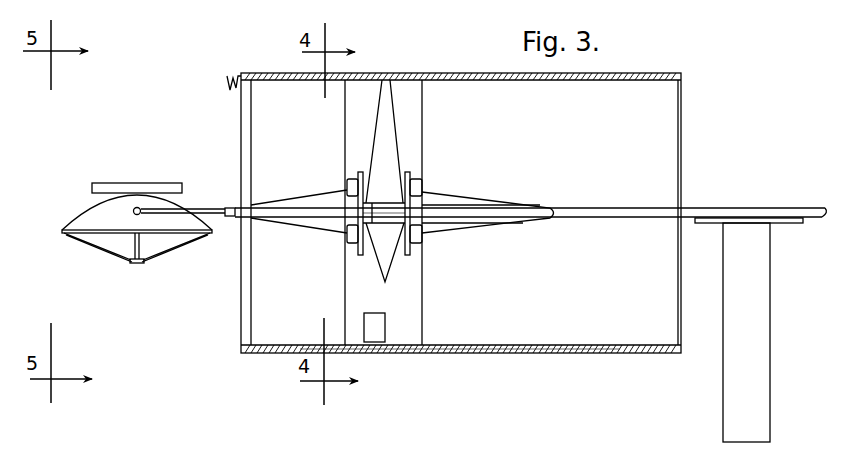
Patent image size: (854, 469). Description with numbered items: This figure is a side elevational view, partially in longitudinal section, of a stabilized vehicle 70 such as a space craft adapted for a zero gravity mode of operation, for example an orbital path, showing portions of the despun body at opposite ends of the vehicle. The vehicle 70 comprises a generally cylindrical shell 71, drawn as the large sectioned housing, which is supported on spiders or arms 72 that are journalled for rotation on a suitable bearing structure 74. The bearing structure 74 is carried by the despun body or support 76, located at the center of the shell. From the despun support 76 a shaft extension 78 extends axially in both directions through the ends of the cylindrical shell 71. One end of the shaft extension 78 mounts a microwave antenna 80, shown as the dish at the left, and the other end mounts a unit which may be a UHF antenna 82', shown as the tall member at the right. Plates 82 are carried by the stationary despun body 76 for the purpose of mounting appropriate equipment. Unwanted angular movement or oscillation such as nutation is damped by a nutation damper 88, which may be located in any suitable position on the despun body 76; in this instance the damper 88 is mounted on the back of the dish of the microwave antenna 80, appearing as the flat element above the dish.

The vehicle 70 is at (617, 358).
The cylindrical shell 71 is at (483, 355).
The spiders or arms 72 is at (393, 158).
The bearing structure 74 is at (383, 213).
The despun support 76 is at (337, 188).
The shaft extension 78 is at (577, 218).
The microwave antenna 80 is at (77, 213).
The plates 82 is at (382, 222).
The UHF antenna 82' is at (755, 330).
The nutation damper 88 is at (172, 183).